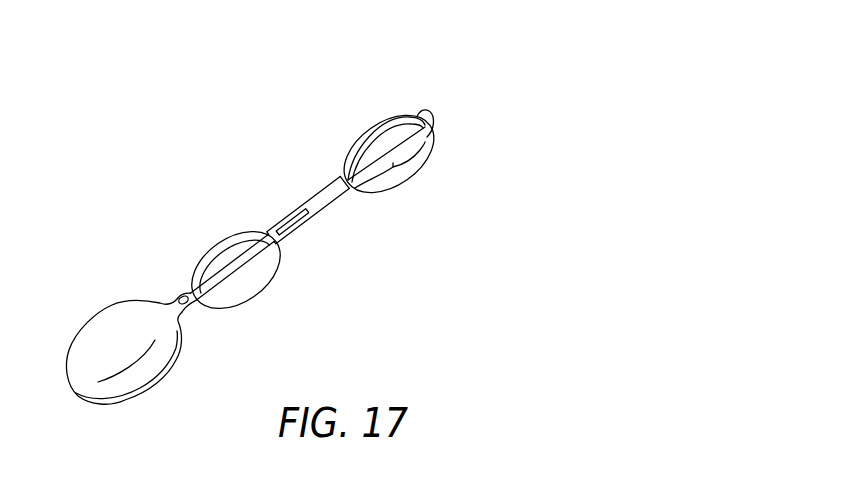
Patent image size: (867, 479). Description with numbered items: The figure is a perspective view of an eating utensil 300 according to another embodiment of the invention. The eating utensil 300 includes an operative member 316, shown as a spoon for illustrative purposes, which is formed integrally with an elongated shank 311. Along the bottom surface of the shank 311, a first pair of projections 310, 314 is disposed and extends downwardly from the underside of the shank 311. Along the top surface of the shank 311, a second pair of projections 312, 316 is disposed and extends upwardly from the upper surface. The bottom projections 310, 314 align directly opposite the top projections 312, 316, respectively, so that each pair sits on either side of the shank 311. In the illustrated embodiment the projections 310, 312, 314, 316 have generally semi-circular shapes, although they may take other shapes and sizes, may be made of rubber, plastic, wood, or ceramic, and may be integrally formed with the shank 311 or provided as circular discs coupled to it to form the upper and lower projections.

The eating utensil 300 is at (261, 125).
The bottom projection 310 is at (256, 288).
The elongated shank 311 is at (310, 198).
The top projection 312 is at (217, 245).
The bottom projection 314 is at (396, 180).
The operative member / top projection 316 is at (105, 327).